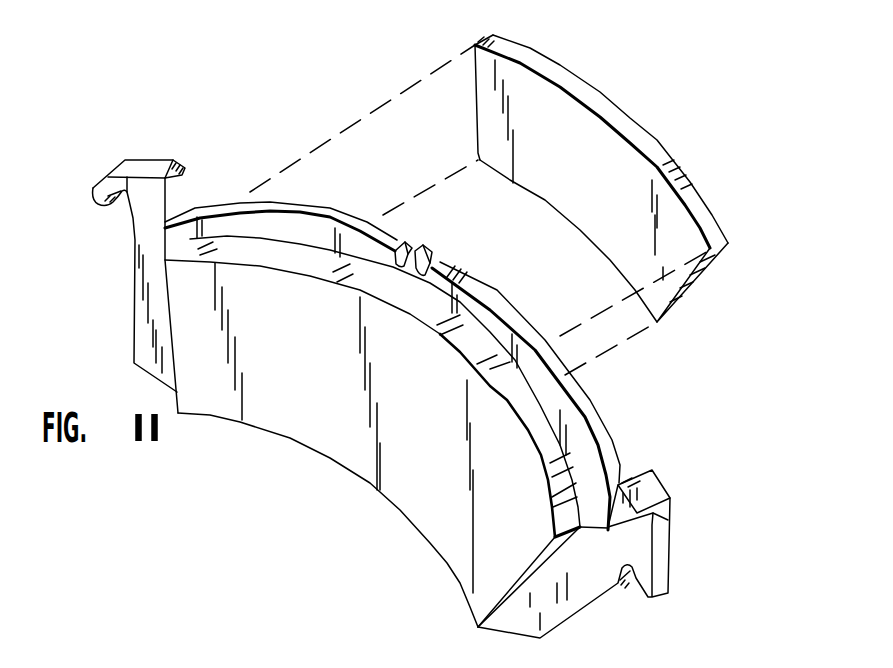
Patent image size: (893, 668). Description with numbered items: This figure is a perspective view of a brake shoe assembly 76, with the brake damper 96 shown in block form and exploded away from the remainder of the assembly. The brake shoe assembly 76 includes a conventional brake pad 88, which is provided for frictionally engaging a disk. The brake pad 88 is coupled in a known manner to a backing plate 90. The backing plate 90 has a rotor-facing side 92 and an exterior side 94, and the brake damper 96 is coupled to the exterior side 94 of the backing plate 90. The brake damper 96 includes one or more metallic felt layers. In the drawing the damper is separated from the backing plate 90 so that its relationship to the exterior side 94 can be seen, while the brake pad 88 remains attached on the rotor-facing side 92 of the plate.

The brake shoe assembly 76 is at (192, 496).
The brake pad 88 is at (415, 500).
The backing plate 90 is at (603, 415).
The rotor-facing side 92 is at (592, 587).
The exterior side 94 is at (302, 208).
The brake damper 96 is at (657, 138).